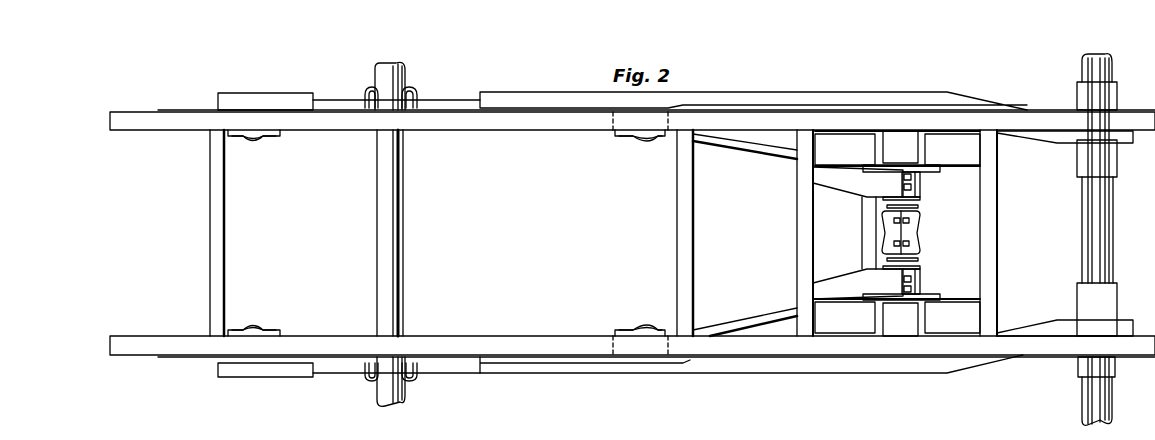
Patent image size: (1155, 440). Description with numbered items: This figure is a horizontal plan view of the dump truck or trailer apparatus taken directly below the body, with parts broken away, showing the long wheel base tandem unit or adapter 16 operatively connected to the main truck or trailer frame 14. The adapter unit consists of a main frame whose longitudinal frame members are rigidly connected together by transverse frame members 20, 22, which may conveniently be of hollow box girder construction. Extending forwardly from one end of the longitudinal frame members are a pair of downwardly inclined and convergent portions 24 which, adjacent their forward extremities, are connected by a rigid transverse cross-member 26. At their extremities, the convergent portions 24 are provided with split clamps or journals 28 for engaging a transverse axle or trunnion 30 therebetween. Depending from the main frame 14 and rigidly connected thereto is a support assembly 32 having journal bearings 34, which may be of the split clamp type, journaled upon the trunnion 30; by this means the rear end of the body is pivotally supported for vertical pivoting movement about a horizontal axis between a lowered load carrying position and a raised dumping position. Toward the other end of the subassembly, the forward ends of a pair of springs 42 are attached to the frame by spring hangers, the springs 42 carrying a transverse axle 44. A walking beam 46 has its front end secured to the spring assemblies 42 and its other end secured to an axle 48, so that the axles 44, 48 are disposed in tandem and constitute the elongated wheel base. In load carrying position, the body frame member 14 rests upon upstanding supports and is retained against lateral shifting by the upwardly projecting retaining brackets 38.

The main truck or trailer frame 14 is at (543, 122).
The tandem unit or adapter 16 is at (670, 199).
The transverse frame member 20 is at (213, 205).
The transverse frame member 22 is at (686, 276).
The downwardly inclined and convergent portions 24 is at (773, 157).
The transverse cross-member 26 is at (868, 203).
The split clamps or journals 28 is at (916, 183).
The transverse axle or trunnion 30 is at (908, 258).
The support assembly 32 is at (1009, 221).
The journal bearings 34 is at (903, 137).
The retaining brackets 38 is at (253, 146).
The springs 42 is at (449, 103).
The transverse axle 44 is at (406, 226).
The walking beam 46 is at (777, 98).
The axle 48 is at (1105, 214).